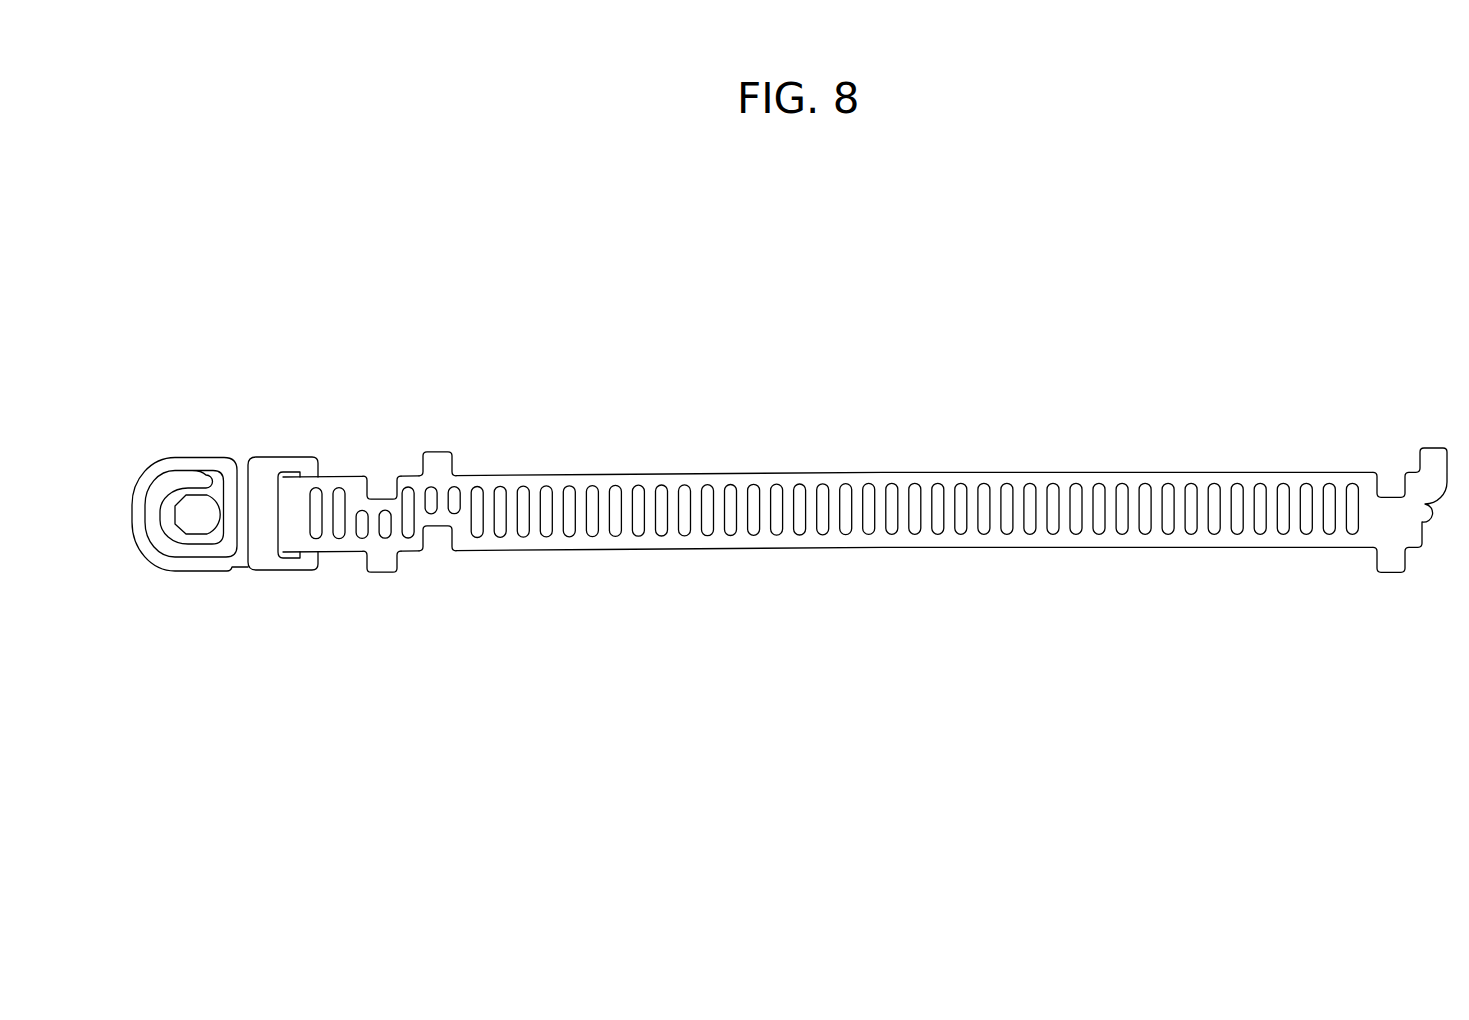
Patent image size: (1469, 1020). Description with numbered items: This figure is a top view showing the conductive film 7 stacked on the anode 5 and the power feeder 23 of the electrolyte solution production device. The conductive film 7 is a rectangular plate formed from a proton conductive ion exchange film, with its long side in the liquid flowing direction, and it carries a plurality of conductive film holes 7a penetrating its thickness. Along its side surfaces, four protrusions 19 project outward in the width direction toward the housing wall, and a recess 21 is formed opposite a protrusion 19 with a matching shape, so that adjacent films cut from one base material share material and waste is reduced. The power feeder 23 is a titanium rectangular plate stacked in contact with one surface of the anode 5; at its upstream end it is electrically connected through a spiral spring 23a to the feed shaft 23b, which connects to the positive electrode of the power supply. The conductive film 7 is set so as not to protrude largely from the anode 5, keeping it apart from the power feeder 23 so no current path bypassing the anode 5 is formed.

The anode 5 is at (871, 513).
The conductive film 7 is at (838, 462).
The conductive film holes 7a is at (912, 502).
The protrusions 19 is at (437, 453).
The recess 21 is at (383, 498).
The power feeder 23 is at (293, 456).
The spiral spring 23a is at (162, 462).
The feed shaft 23b is at (197, 520).